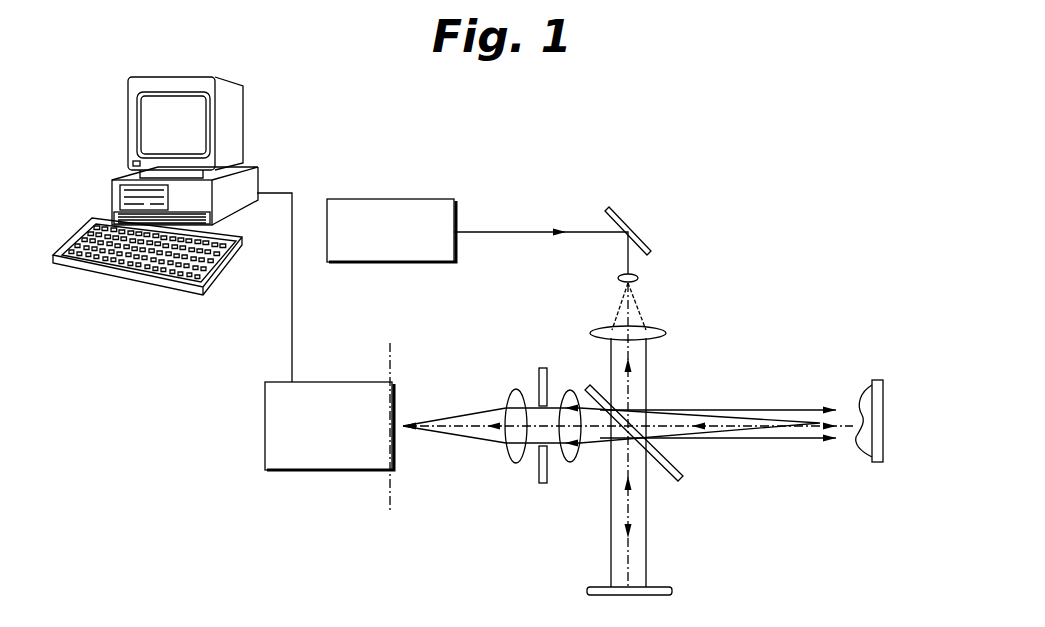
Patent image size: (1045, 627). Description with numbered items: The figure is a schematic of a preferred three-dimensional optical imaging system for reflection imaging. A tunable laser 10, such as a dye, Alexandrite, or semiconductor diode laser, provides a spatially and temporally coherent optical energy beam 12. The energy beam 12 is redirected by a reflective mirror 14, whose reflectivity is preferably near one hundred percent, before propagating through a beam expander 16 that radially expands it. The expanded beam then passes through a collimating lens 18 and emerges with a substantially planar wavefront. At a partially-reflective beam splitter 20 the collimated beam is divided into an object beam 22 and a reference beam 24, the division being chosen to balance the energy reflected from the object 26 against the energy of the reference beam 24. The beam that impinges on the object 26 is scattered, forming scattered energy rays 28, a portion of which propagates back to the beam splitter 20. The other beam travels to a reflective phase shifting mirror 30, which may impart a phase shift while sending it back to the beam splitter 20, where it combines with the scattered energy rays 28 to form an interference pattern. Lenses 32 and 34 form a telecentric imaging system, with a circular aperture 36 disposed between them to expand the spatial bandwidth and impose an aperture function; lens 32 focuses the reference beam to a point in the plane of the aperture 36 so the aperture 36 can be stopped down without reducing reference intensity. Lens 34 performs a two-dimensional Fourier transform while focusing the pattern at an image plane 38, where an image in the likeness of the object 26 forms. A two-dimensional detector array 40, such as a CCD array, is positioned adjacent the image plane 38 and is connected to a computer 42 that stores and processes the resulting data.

The tunable laser 10 is at (396, 199).
The optical energy beam 12 is at (497, 231).
The reflective mirror 14 is at (618, 218).
The beam expander 16 is at (638, 281).
The collimating lens 18 is at (666, 332).
The beam splitter 20 is at (683, 473).
The object beam 22 is at (594, 508).
The reference beam 24 is at (835, 460).
The object 26 is at (880, 463).
The scattered energy rays 28 is at (713, 420).
The reflective phase shifting mirror 30 is at (672, 591).
The lens 32 is at (570, 388).
The lens 34 is at (510, 455).
The circular aperture 36 is at (538, 480).
The image plane 38 is at (410, 363).
The two-dimensional detector array 40 is at (265, 415).
The computer 42 is at (243, 110).